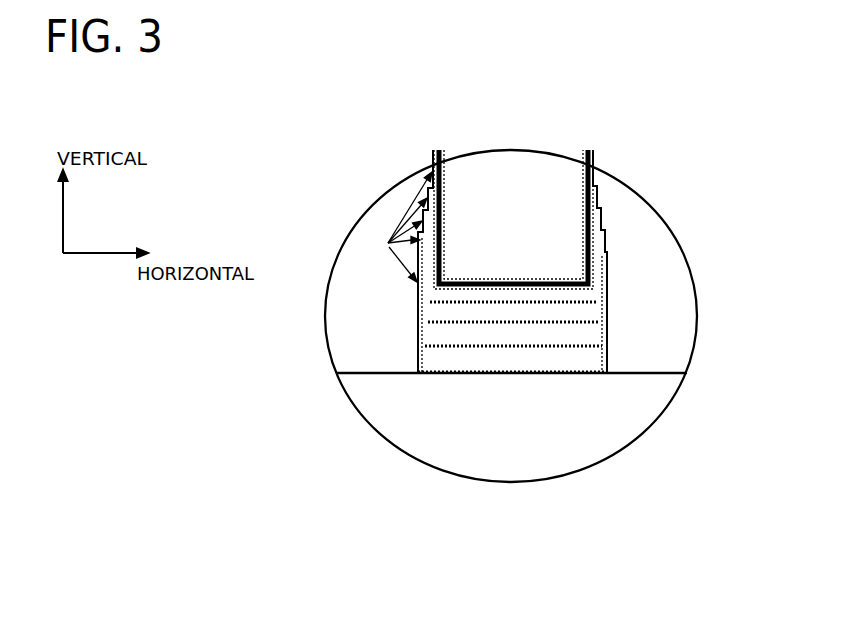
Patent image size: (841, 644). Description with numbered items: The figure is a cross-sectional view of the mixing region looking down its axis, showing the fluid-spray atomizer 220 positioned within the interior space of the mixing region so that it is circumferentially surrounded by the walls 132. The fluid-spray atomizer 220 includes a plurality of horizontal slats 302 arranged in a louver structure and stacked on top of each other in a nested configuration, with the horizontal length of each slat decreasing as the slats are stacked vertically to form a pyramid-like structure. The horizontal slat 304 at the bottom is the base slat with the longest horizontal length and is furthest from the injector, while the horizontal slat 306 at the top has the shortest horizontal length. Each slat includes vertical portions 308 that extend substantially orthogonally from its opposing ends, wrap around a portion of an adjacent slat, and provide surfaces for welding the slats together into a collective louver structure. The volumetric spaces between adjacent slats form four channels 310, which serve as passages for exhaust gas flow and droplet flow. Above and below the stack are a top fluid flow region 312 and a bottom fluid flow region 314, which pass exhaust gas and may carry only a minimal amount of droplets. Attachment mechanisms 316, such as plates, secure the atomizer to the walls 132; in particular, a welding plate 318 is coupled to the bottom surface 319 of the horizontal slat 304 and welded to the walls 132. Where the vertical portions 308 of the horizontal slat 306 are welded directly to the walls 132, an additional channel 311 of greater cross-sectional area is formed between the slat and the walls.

The walls 132 is at (361, 217).
The fluid-spray atomizer 220 is at (645, 229).
The plurality of horizontal slats 302 is at (564, 261).
The horizontal slat 304 is at (522, 378).
The horizontal slat 306 is at (538, 281).
The vertical portions 308 is at (392, 227).
The channels 310 is at (481, 361).
The additional channel 311 is at (508, 173).
The top fluid flow region 312 is at (344, 281).
The bottom fluid flow region 314 is at (583, 443).
The attachment mechanisms 316 is at (435, 146).
The welding plate 318 is at (357, 377).
The bottom surface 319 is at (452, 386).